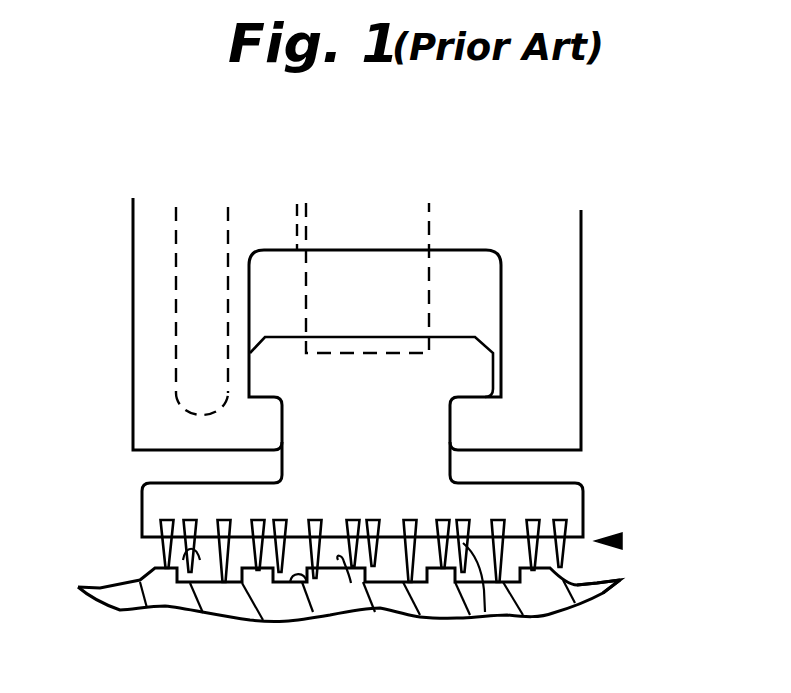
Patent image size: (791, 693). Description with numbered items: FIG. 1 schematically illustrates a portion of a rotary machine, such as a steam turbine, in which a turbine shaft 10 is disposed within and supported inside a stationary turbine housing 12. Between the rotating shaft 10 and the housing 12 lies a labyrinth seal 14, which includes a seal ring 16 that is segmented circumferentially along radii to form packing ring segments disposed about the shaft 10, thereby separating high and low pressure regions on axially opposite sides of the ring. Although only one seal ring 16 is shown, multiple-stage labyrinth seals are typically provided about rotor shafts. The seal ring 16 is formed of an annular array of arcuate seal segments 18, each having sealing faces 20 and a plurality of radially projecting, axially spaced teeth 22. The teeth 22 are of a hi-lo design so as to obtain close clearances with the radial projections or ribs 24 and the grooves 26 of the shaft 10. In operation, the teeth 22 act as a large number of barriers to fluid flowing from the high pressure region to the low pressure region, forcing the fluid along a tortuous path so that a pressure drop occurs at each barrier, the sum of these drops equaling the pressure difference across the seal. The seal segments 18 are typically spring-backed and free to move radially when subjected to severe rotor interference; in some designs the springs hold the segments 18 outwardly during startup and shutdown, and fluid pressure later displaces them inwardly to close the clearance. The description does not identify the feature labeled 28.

The turbine shaft 10 is at (138, 580).
The turbine housing 12 is at (133, 323).
The labyrinth seal 14 is at (622, 541).
The seal ring 16 is at (433, 460).
The arcuate seal segments 18 is at (178, 483).
The sealing faces 20 is at (168, 563).
The teeth 22 is at (480, 618).
The radial projections or ribs 24 is at (338, 560).
The grooves 26 is at (315, 618).
The fabric edge 28 is at (573, 545).